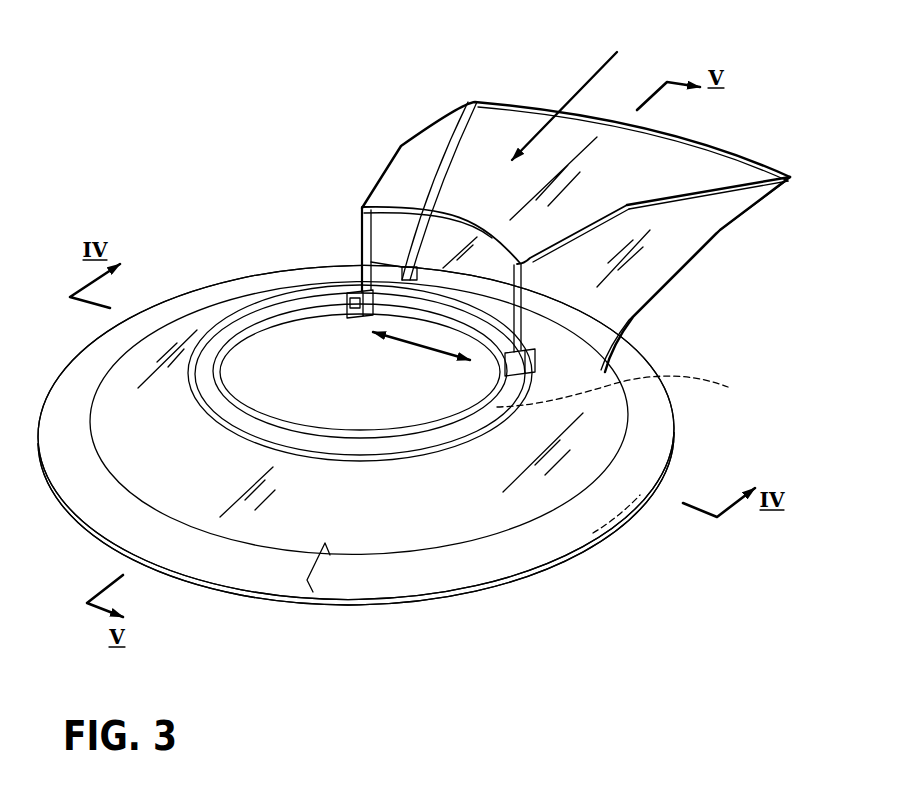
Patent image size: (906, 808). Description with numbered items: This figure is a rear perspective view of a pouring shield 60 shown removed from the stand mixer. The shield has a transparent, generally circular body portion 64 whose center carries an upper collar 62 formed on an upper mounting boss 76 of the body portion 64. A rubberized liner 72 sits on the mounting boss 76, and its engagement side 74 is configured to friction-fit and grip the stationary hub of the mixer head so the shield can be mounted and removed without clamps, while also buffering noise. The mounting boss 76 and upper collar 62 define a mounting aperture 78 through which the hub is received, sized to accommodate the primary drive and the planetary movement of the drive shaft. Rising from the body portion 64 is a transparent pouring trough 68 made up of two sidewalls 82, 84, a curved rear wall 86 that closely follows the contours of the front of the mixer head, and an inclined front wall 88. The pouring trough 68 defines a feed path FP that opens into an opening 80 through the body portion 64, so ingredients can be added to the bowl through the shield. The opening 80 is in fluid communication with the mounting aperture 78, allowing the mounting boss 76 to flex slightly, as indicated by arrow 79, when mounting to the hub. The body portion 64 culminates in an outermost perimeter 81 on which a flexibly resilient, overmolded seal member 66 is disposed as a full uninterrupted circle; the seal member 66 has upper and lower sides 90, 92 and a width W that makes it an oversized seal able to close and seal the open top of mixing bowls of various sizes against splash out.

The pouring shield 60 is at (197, 191).
The upper collar 62 is at (240, 308).
The body portion 64 is at (163, 468).
The seal member 66 is at (570, 543).
The pouring trough 68 is at (695, 163).
The rubberized liner 72 is at (212, 350).
The engagement side 74 is at (297, 298).
The upper mounting boss 76 is at (627, 391).
The mounting aperture 78 is at (316, 391).
The arrow 79 is at (410, 343).
The opening 80 is at (484, 330).
The outermost perimeter 81 is at (637, 520).
The sidewall 82 is at (372, 195).
The sidewall 84 is at (707, 213).
The curved rear wall 86 is at (373, 243).
The inclined front wall 88 is at (707, 257).
The upper side 90 is at (492, 566).
The lower side 92 is at (450, 597).
The width W is at (303, 567).
The feed path FP is at (572, 88).